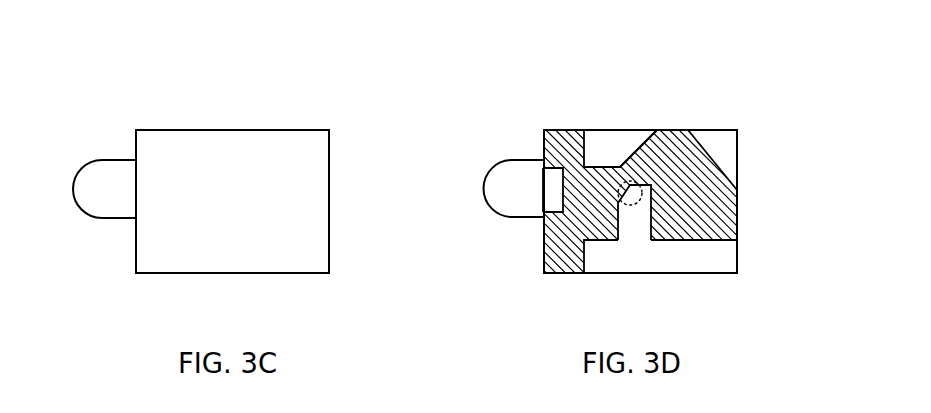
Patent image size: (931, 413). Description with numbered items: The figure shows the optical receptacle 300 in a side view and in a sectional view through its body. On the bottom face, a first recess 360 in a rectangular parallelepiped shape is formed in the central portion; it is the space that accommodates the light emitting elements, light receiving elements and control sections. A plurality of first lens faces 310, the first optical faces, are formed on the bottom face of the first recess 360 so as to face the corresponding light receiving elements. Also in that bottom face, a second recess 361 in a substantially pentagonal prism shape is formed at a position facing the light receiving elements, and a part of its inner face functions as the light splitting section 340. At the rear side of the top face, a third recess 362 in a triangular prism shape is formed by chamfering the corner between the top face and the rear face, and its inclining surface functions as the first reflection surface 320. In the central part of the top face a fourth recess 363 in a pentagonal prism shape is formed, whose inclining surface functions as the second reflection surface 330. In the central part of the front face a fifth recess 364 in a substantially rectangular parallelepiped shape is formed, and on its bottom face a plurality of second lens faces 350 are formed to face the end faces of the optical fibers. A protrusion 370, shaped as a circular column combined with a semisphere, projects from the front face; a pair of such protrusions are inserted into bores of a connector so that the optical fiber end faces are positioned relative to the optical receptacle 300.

In FIG. 3C, the optical receptacle 300 is at (336, 97).
In FIG. 3D, the optical receptacle 300 is at (746, 98).
In FIG. 3D, the first lens face 310 is at (698, 242).
In FIG. 3D, the first reflection surface 320 is at (688, 131).
In FIG. 3D, the second reflection surface 330 is at (643, 144).
In FIG. 3D, the light splitting section 340 is at (632, 200).
In FIG. 3D, the second lens face 350 is at (543, 197).
In FIG. 3D, the first recess 360 is at (606, 262).
In FIG. 3D, the second recess 361 is at (630, 228).
In FIG. 3D, the third recess 362 is at (722, 151).
In FIG. 3D, the fourth recess 363 is at (597, 147).
In FIG. 3D, the fifth recess 364 is at (543, 186).
In FIG. 3C, the protrusion 370 is at (106, 173).
In FIG. 3D, the protrusion 370 is at (502, 172).